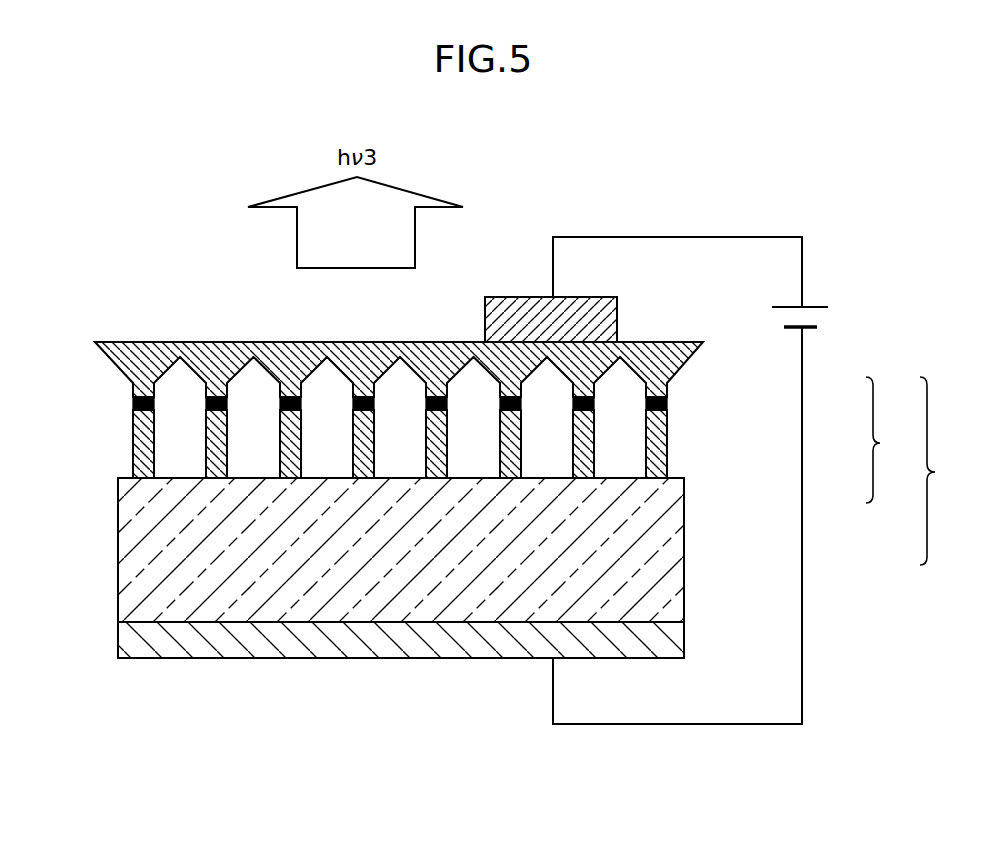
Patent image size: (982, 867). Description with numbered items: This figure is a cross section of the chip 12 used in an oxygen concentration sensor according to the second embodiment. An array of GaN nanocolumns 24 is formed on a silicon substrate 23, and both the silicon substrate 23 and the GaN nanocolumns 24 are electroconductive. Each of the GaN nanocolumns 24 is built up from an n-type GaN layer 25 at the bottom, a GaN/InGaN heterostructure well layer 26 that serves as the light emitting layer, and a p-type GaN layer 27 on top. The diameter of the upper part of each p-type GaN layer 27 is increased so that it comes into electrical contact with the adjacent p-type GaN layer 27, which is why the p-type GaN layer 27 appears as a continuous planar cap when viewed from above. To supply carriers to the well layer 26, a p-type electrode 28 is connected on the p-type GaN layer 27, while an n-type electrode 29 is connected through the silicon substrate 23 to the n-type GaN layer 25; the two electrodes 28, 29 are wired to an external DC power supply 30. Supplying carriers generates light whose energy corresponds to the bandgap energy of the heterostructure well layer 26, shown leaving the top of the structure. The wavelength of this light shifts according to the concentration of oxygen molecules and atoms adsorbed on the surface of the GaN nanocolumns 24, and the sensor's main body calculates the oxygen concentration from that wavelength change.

The chip 12 is at (947, 471).
The silicon substrate 23 is at (667, 552).
The GaN nanocolumns 24 is at (893, 440).
The n-type GaN layer 25 is at (667, 440).
The GaN/InGaN heterostructure well layer 26 is at (667, 403).
The p-type GaN layer 27 is at (693, 357).
The p-type electrode 28 is at (587, 297).
The n-type electrode 29 is at (367, 658).
The external DC power supply 30 is at (812, 307).